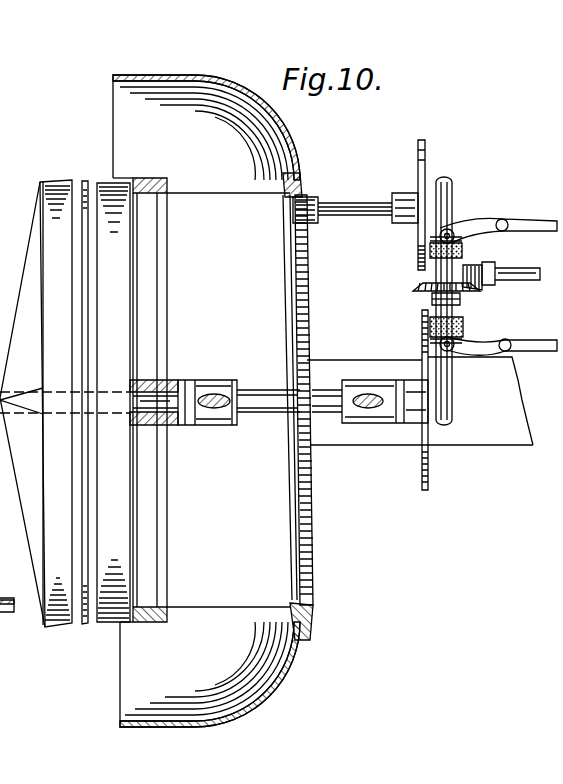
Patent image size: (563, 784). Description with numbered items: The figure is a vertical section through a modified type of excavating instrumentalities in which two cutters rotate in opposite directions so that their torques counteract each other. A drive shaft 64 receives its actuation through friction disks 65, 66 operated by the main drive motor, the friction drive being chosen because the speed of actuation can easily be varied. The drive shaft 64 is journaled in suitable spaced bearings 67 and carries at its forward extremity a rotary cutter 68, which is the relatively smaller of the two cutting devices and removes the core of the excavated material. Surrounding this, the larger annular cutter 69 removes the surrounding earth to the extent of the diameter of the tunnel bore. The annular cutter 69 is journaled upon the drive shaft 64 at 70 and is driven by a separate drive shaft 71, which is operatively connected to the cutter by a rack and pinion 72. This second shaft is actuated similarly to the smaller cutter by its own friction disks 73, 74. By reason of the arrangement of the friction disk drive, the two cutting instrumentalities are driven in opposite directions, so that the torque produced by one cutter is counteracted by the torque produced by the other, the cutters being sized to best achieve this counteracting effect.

The drive shaft 64 is at (269, 402).
The friction disk 65 is at (432, 462).
The friction disk 66 is at (466, 327).
The spaced bearings 67 is at (204, 400).
The rotary cutter 68 is at (58, 186).
The annular cutter 69 is at (230, 126).
The journal 70 is at (170, 380).
The drive shaft 71 is at (373, 205).
The rack and pinion 72 is at (302, 192).
The friction disk 73 is at (425, 160).
The friction disk 74 is at (456, 250).